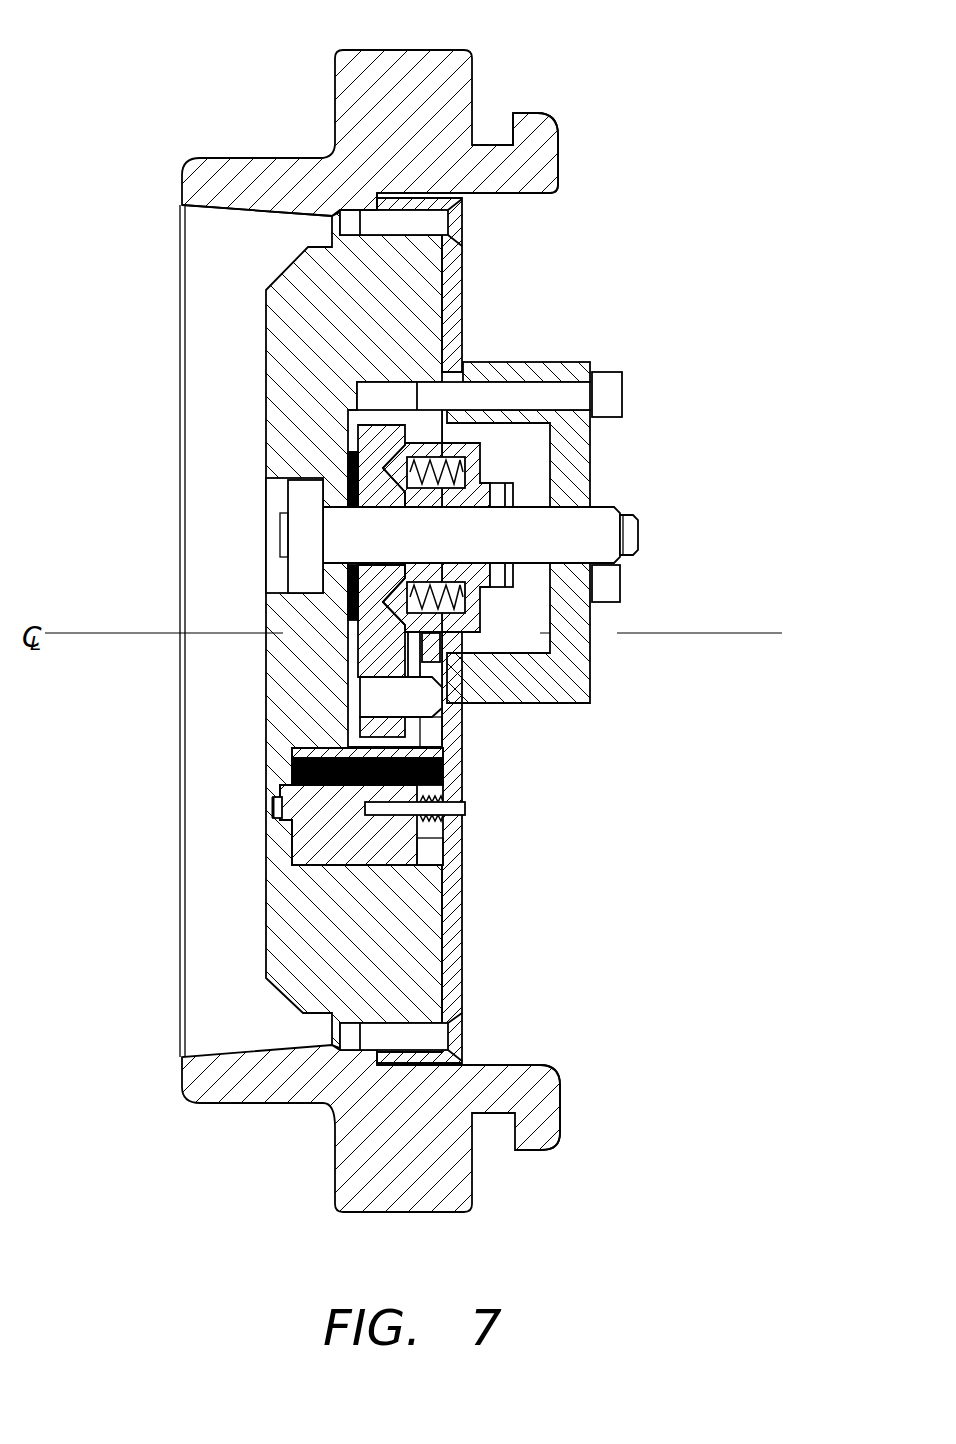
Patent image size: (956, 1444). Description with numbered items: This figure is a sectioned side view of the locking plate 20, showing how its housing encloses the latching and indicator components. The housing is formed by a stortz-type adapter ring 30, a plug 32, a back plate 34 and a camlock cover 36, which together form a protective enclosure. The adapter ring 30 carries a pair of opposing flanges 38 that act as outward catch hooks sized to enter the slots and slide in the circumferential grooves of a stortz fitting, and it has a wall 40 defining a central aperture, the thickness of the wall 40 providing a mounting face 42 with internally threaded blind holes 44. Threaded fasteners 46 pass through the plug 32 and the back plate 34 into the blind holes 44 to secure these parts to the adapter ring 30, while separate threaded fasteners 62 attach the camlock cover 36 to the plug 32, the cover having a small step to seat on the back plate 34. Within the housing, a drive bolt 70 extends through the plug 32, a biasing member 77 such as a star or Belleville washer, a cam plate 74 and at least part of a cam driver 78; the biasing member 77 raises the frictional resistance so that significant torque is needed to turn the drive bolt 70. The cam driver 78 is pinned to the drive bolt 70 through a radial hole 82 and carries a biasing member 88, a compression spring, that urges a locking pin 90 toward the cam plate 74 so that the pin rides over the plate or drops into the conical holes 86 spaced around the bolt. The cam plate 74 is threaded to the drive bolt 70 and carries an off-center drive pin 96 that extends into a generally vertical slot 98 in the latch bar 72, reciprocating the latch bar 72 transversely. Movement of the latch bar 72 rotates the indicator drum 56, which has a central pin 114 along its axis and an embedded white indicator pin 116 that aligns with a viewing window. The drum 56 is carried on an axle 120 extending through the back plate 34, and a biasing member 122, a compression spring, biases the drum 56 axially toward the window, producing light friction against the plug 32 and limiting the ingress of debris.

The locking plate 20 is at (645, 207).
The adapter ring 30 is at (202, 170).
The plug 32 is at (264, 292).
The back plate 34 is at (463, 283).
The camlock cover 36 is at (592, 362).
The flanges 38 is at (557, 115).
The wall 40 is at (222, 207).
The mounting face 42 is at (473, 145).
The blind holes 44 is at (350, 210).
The threaded fasteners 46 is at (463, 223).
The indicator drum 56 is at (318, 835).
The threaded fasteners 62 is at (622, 388).
The drive bolt 70 is at (592, 547).
The latch bar 72 is at (387, 648).
The cam plate 74 is at (348, 453).
The biasing member 77 is at (349, 467).
The cam driver 78 is at (514, 497).
The radial hole 82 is at (497, 493).
The holes 86 is at (348, 472).
The biasing member 88 is at (462, 613).
The locking pin 90 is at (467, 637).
The drive pin 96 is at (387, 697).
The slot 98 is at (430, 662).
The central pin 114 is at (273, 806).
The indicator pin 116 is at (446, 775).
The axle 120 is at (467, 810).
The biasing member 122 is at (440, 820).